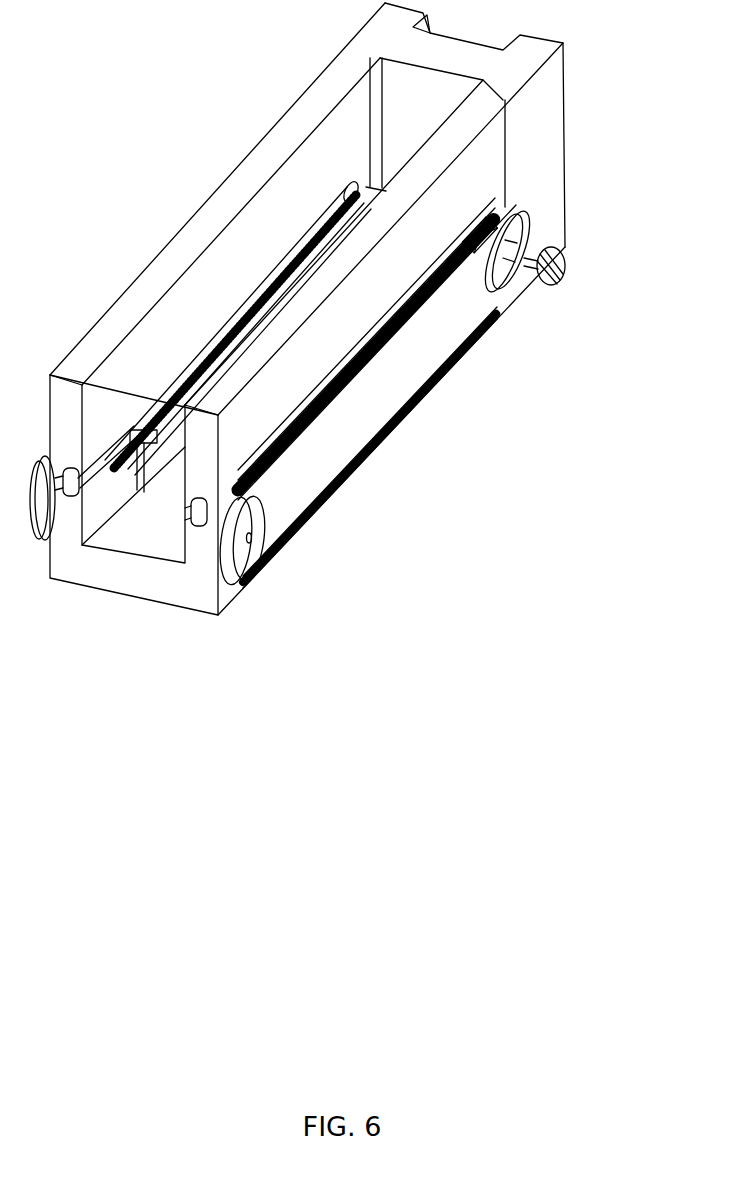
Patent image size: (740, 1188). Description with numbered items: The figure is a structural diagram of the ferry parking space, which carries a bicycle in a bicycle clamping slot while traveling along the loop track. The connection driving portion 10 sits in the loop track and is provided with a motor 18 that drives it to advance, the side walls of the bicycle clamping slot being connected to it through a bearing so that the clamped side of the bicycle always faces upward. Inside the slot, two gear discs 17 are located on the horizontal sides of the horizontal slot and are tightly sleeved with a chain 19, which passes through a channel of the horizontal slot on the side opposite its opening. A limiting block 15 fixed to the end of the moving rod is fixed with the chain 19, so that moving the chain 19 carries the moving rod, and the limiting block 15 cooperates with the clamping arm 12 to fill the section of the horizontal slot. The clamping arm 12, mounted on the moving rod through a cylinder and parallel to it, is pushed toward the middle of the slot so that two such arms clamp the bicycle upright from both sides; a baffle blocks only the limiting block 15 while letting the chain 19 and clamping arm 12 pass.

The connection driving portion 10 is at (553, 143).
The clamping arm 12 is at (162, 453).
The limiting block 15 is at (478, 233).
The gear disc 17 is at (493, 287).
The motor 18 is at (567, 263).
The chain 19 is at (402, 412).